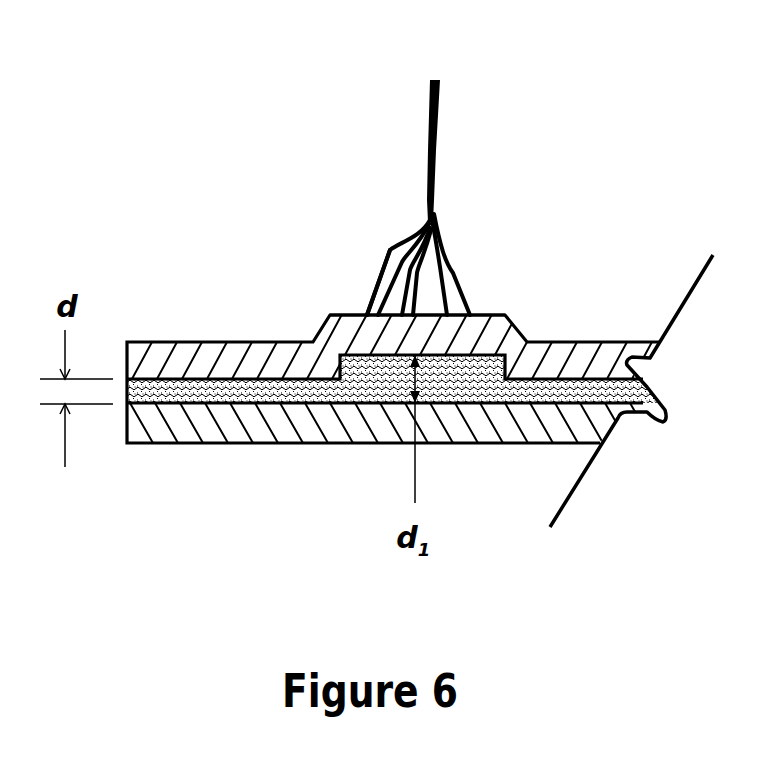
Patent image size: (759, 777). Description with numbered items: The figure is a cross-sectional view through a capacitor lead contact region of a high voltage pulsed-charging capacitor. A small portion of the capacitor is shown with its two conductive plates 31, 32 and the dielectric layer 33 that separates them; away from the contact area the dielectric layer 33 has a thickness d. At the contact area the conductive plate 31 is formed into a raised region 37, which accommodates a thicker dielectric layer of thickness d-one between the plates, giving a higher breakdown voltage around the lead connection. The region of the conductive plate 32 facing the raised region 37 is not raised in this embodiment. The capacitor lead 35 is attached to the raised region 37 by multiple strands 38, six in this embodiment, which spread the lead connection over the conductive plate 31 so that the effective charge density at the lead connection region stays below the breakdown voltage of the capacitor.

The conductive plate 31 is at (603, 353).
The conductive plate 32 is at (225, 418).
The dielectric layer 33 is at (565, 392).
The capacitor lead 35 is at (455, 127).
The raised region 37 is at (389, 342).
The strands 38 is at (373, 250).